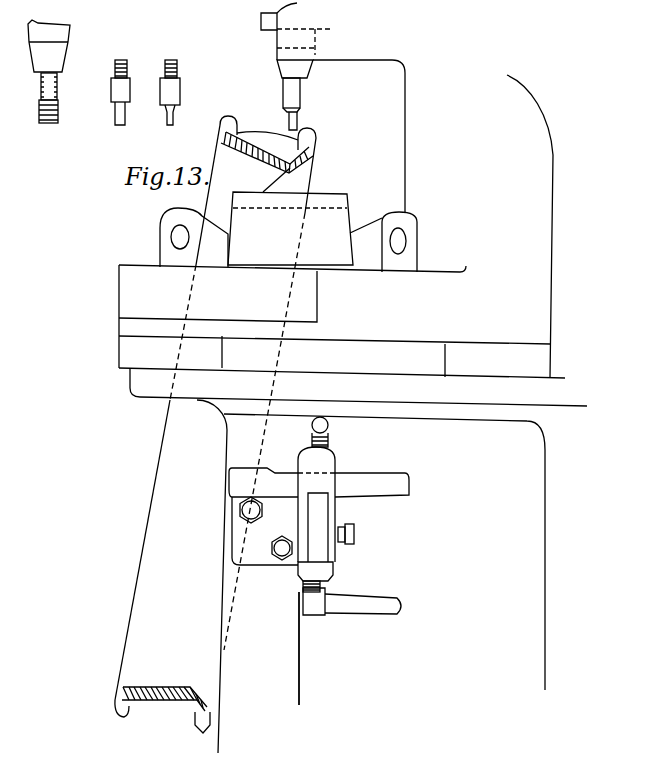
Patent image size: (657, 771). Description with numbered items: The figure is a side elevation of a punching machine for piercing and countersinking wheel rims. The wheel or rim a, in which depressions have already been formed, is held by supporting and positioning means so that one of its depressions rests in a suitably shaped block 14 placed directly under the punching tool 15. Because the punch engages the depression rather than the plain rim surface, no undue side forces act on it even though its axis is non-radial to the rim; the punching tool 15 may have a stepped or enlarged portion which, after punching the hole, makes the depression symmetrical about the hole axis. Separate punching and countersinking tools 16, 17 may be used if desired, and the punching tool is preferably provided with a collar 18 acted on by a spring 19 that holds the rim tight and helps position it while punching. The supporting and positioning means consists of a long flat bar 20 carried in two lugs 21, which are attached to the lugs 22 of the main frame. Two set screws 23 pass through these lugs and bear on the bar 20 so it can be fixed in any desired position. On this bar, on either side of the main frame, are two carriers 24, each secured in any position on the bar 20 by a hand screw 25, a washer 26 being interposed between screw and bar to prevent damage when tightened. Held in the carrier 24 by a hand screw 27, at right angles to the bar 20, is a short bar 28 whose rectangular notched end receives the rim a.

The block 14 is at (284, 181).
The punching tool 15 is at (300, 96).
The punching tool 16 is at (114, 90).
The countersinking tool 17 is at (162, 92).
The collar 18 is at (58, 110).
The spring 19 is at (57, 90).
The long flat bar 20 is at (320, 518).
The lugs 21 is at (252, 562).
The lugs of the main frame 22 is at (289, 633).
The set screws 23 is at (355, 535).
The carriers 24 is at (331, 570).
The hand screw 25 is at (388, 601).
The washer 26 is at (302, 581).
The hand screw 27 is at (328, 426).
The short bar 28 is at (385, 485).
The wheel or rim a is at (144, 574).